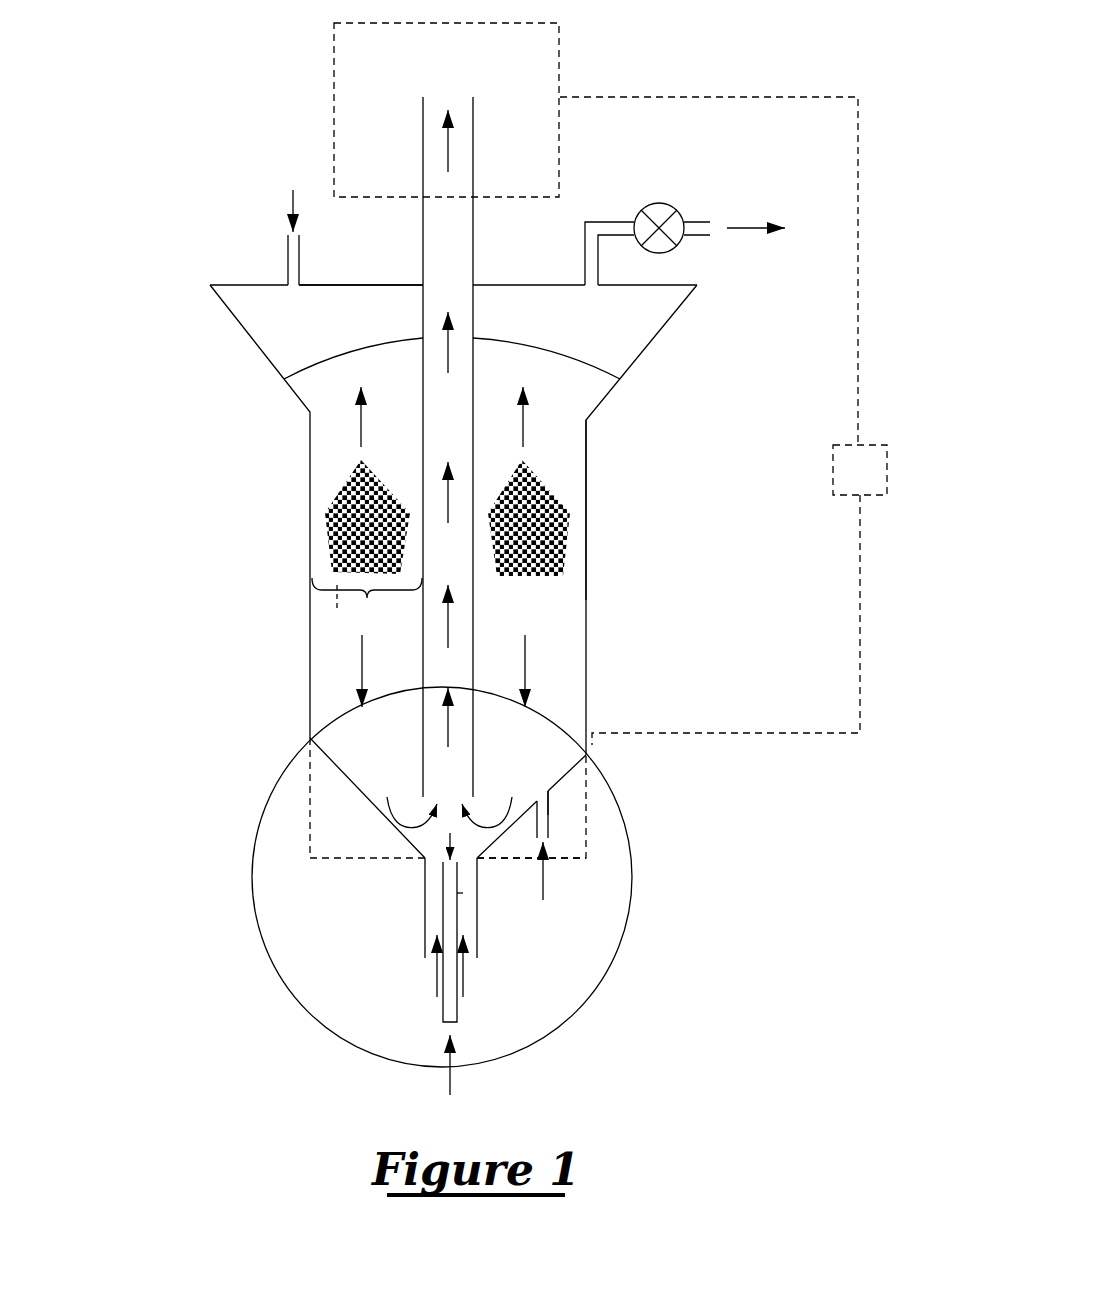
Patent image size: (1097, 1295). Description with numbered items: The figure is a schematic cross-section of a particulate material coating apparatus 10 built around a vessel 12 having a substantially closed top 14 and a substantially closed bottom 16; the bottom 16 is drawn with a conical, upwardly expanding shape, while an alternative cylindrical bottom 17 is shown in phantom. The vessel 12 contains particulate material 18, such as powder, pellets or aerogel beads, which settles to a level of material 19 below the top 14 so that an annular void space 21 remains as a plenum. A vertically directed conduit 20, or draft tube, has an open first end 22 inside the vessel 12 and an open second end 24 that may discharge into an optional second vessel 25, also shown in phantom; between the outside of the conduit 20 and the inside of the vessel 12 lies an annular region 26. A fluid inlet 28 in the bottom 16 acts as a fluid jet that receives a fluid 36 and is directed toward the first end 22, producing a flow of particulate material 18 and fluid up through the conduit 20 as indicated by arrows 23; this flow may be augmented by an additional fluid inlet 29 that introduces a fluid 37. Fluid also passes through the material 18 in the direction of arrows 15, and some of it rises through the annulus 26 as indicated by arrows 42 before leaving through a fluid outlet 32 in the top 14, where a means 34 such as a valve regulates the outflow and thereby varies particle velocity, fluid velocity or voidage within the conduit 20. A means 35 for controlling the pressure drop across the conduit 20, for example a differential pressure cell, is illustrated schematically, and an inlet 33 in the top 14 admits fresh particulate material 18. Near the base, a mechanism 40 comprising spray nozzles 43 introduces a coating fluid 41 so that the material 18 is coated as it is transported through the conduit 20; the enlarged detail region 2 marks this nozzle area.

The enlarged detail region 2 is at (252, 835).
The particulate material coating apparatus 10 is at (148, 435).
The vessel 12 is at (310, 585).
The top 14 is at (362, 283).
The arrows 15 is at (366, 421).
The bottom 16 is at (377, 808).
The cylindrical bottom 17 is at (575, 862).
The particulate material 18 is at (560, 540).
The level of material 19 is at (350, 348).
The conduit 20 is at (423, 297).
The void space 21 is at (588, 333).
The open first end 22 is at (452, 798).
The arrows 23 is at (447, 717).
The open second end 24 is at (448, 98).
The second vessel 25 is at (333, 98).
The annular region 26 is at (367, 599).
The fluid inlet 28 is at (425, 908).
The additional fluid inlet 29 is at (548, 815).
The fluid outlet 32 is at (585, 258).
The inlet 33 is at (285, 263).
The means for regulating flow 34 is at (673, 205).
The means for controlling pressure drop 35 is at (833, 458).
The fluid 36 is at (463, 958).
The fluid 37 is at (545, 887).
The mechanism for introducing coating fluid 40 is at (463, 898).
The coating fluid 41 is at (447, 1050).
The arrows 42 is at (448, 860).
The spray nozzles 43 is at (457, 893).